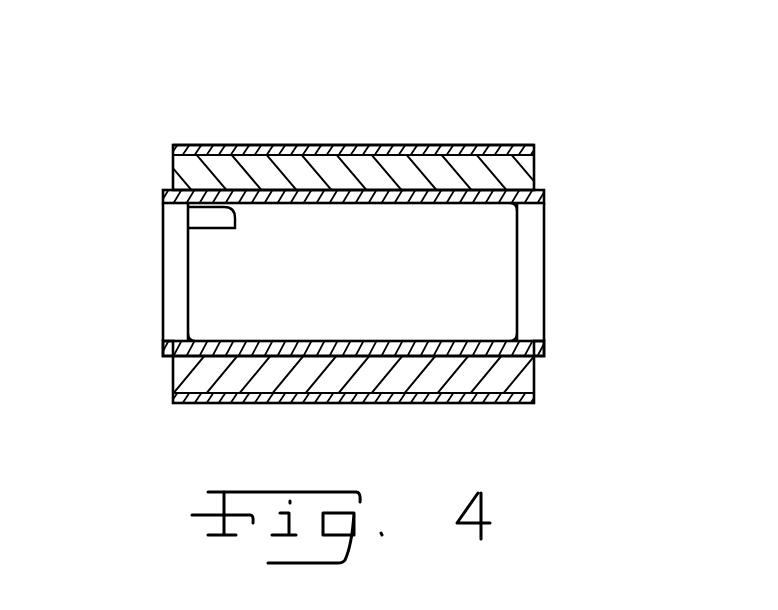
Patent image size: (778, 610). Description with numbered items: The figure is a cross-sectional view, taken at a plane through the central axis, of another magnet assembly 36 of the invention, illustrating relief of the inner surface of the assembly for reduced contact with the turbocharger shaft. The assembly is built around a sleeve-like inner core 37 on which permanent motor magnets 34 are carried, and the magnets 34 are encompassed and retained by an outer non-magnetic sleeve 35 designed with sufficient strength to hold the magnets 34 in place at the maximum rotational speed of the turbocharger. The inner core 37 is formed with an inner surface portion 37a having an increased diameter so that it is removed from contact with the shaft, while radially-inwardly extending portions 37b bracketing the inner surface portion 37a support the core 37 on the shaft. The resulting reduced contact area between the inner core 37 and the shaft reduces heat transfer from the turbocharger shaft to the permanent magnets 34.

The permanent motor magnets 34 is at (535, 170).
The outer non-magnetic sleeve 35 is at (322, 145).
The magnet assembly 36 is at (245, 108).
The inner core 37 is at (560, 194).
The inner surface portion 37a is at (233, 228).
The radially-inwardly extending portions 37b is at (165, 345).